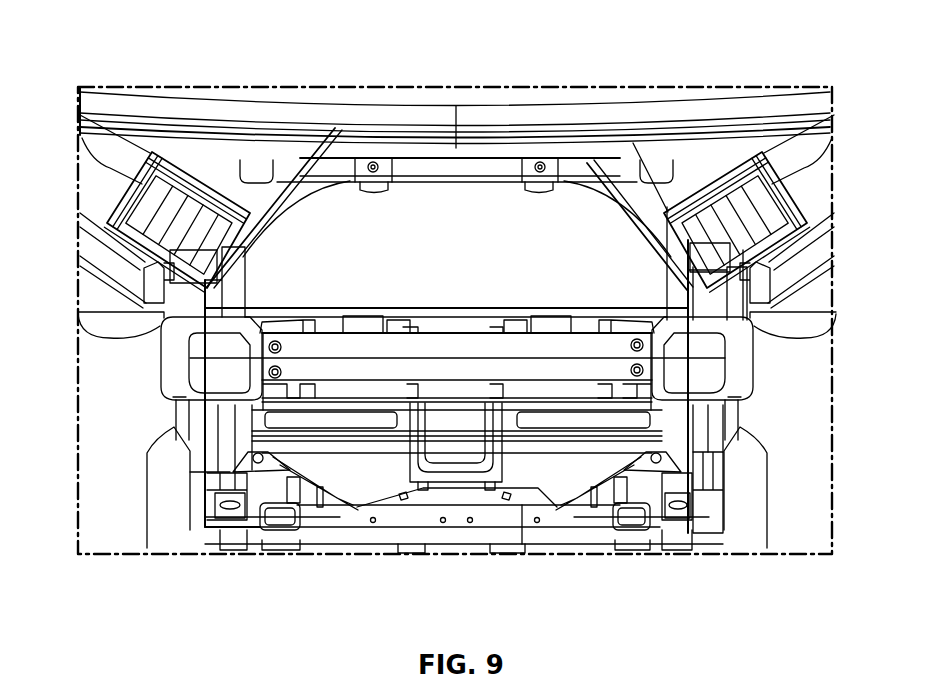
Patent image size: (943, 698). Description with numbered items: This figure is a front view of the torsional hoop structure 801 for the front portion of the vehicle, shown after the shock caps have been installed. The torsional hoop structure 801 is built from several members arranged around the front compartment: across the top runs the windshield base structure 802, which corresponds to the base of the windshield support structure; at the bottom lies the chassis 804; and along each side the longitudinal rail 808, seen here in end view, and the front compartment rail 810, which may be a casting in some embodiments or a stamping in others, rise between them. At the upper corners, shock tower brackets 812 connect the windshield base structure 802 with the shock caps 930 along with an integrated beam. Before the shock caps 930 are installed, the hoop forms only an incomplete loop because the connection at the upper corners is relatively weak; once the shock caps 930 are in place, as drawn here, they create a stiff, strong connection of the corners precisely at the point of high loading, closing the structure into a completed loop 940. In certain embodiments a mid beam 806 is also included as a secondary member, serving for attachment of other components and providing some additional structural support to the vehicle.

The torsional hoop structure 801 is at (230, 260).
The windshield base structure 802 is at (238, 170).
The chassis 804 is at (555, 528).
The mid beam 806 is at (830, 257).
The longitudinal rail 808 is at (183, 380).
The front compartment rail 810 is at (832, 173).
The shock tower brackets 812 is at (335, 128).
The shock caps 930 is at (181, 184).
The completed loop 940 is at (300, 232).